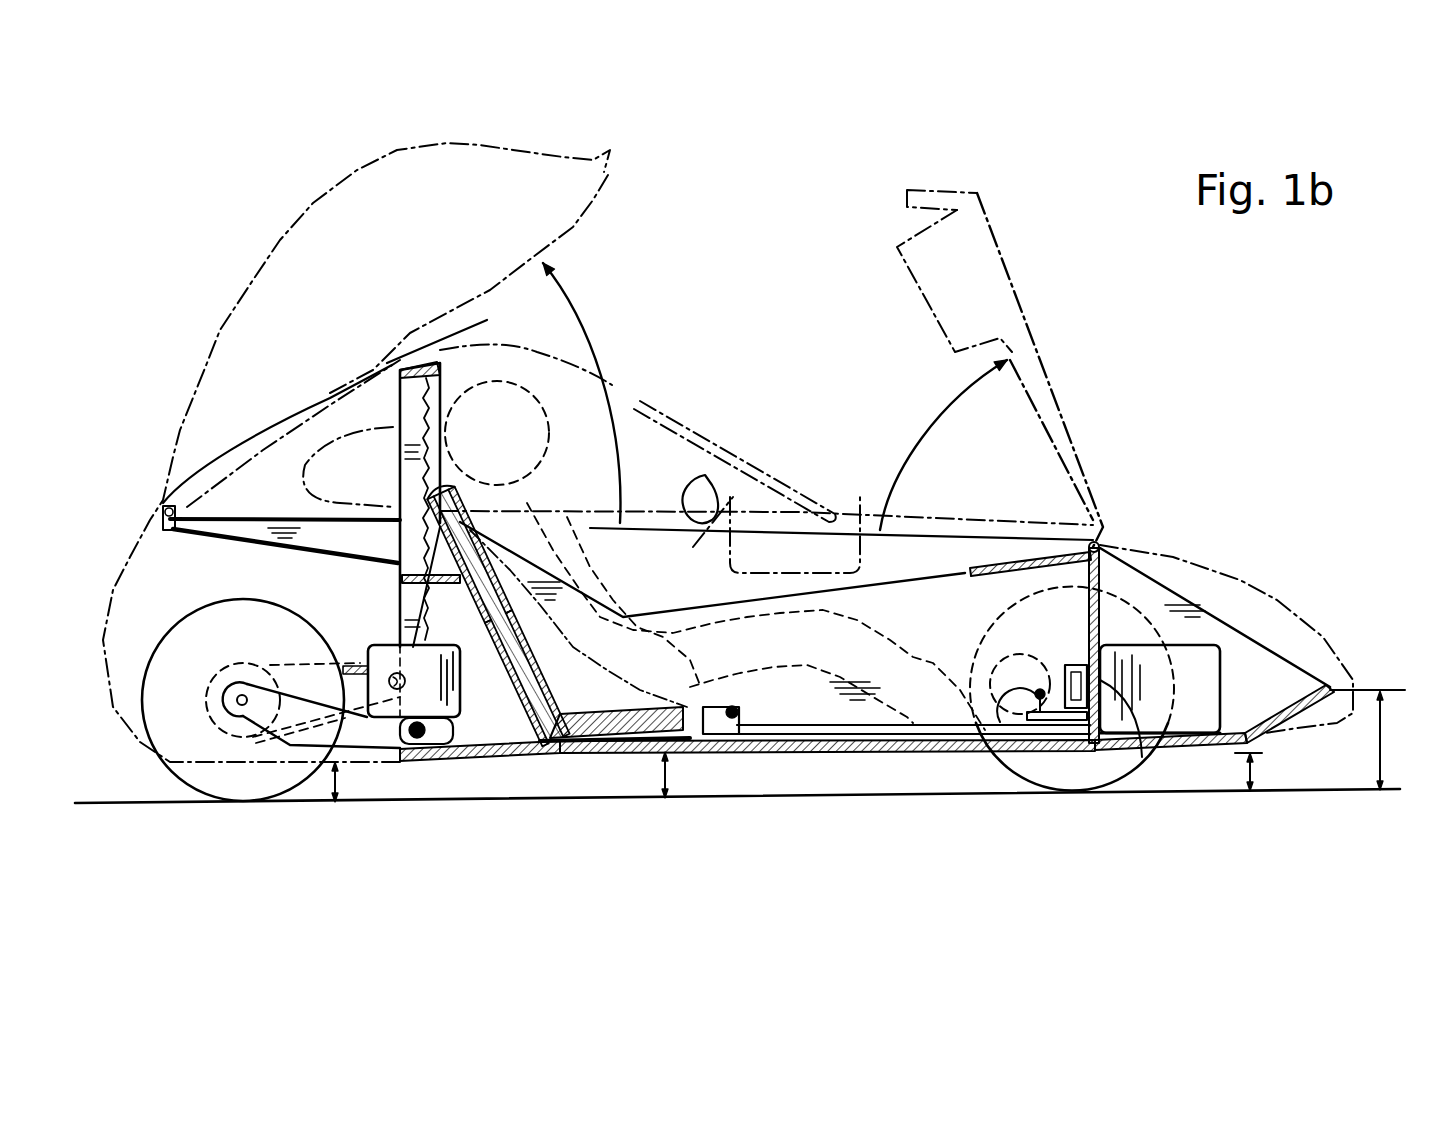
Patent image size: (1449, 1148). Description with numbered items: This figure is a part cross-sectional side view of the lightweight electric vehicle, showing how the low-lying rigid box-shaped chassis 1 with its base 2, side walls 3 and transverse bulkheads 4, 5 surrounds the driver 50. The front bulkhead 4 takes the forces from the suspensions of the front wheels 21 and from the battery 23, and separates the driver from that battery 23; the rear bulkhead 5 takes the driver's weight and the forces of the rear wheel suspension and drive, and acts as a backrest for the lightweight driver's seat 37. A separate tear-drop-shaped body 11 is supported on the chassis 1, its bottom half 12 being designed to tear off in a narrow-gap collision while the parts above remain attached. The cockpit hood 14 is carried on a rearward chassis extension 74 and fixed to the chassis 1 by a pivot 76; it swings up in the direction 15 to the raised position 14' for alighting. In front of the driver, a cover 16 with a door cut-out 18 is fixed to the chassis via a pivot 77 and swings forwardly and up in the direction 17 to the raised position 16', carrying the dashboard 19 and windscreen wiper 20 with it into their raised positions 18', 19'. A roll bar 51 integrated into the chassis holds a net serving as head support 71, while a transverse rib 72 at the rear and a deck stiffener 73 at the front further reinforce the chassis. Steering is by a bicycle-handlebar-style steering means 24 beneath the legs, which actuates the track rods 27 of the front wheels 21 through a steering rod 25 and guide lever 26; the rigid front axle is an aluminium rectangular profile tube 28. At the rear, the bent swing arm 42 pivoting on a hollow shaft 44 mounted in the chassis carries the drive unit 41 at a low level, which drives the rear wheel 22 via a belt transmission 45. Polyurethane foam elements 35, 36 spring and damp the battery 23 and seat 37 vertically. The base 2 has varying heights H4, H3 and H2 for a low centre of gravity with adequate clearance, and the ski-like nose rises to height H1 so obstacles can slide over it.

The chassis 1 is at (1180, 590).
The base 2 is at (880, 722).
The side walls 3 is at (923, 600).
The front bulkhead 4 is at (1100, 578).
The rear bulkhead 5 is at (513, 670).
The body 11 is at (1243, 578).
The bottom body half 12 is at (100, 635).
The cockpit hood 14 is at (440, 425).
The raised position of hood 14' is at (504, 284).
The swinging direction of hood 15 is at (580, 323).
The cover 16 is at (841, 476).
The raised position of cover 16' is at (1041, 370).
The swinging direction of cover 17 is at (927, 423).
The door cut-out 18 is at (804, 504).
The raised position of door cut-out 18' is at (932, 281).
The dashboard 19 is at (754, 480).
The raised position of dashboard 19' is at (907, 193).
The windscreen wiper 20 is at (667, 420).
The front wheels 21 is at (1080, 777).
The rear wheel 22 is at (197, 777).
The battery 23 is at (1205, 667).
The steering means 24 is at (757, 728).
The steering rod 25 is at (877, 722).
The guide lever 26 is at (1057, 712).
The track rods 27 is at (998, 700).
The front axle tube 28 is at (1127, 700).
The foam element 35 is at (1205, 740).
The foam element 36 is at (595, 752).
The driver's seat 37 is at (493, 667).
The drive unit 41 is at (452, 757).
The swing arm 42 is at (310, 737).
The hollow shaft 44 is at (420, 740).
The belt transmission 45 is at (350, 662).
The driver 50 is at (777, 673).
The roll bar 51 is at (346, 402).
The head support 71 is at (440, 437).
The transverse rib 72 is at (400, 590).
The deck stiffener 73 is at (1058, 548).
The rearward chassis extension 74 is at (200, 533).
The pivot 76 is at (160, 508).
The pivot 77 is at (1100, 535).
The nose height H1 is at (1385, 738).
The base height H2 is at (1258, 775).
The base height H3 is at (672, 772).
The base height H4 is at (343, 782).